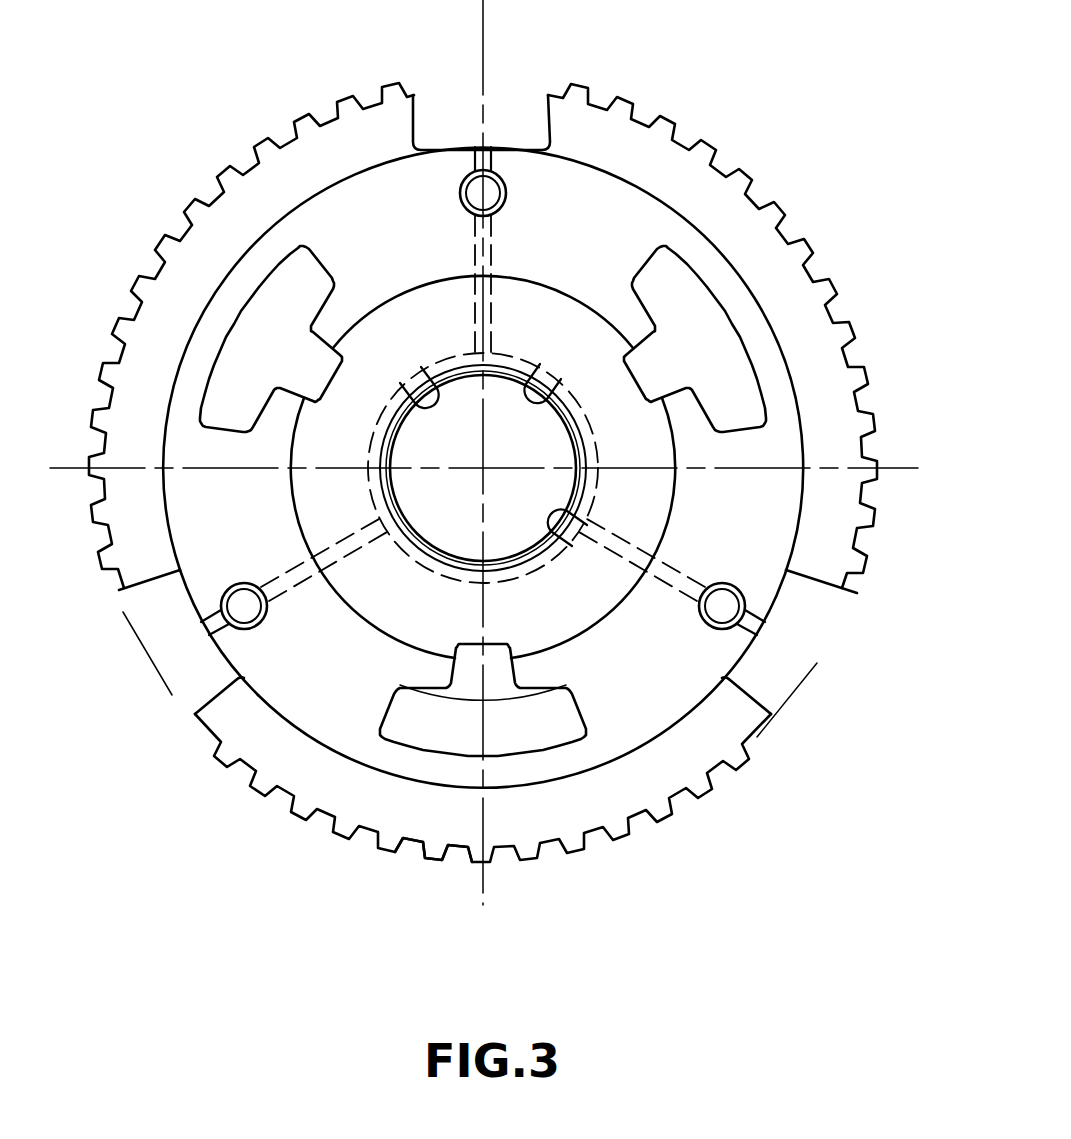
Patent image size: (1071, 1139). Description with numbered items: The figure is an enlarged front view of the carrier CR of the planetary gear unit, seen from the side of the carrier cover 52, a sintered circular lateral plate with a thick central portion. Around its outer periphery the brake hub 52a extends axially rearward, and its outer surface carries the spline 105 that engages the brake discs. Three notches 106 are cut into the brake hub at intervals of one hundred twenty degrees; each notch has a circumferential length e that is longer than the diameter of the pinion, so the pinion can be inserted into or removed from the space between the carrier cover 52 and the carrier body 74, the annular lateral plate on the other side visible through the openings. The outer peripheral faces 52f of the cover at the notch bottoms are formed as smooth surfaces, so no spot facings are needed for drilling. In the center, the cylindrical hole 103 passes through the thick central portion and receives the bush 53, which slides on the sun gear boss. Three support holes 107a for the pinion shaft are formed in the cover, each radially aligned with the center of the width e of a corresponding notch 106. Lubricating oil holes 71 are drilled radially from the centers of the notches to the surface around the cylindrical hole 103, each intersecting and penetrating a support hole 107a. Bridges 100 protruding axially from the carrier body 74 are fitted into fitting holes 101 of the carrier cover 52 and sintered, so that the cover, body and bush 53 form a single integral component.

The carrier cover 52 is at (704, 111).
The brake hub 52a is at (262, 788).
The outer peripheral faces 52f is at (217, 655).
The bush 53 is at (560, 398).
The lubricating oil holes 71 is at (477, 257).
The carrier body 74 is at (693, 293).
The bridges 100 is at (657, 360).
The fitting holes 101 is at (509, 678).
The cylindrical hole 103 is at (402, 390).
The spline 105 is at (405, 850).
The notches 106 is at (550, 113).
The support holes 107a is at (506, 203).
The carrier CR is at (276, 108).
The circumferential length of notch e is at (550, 130).